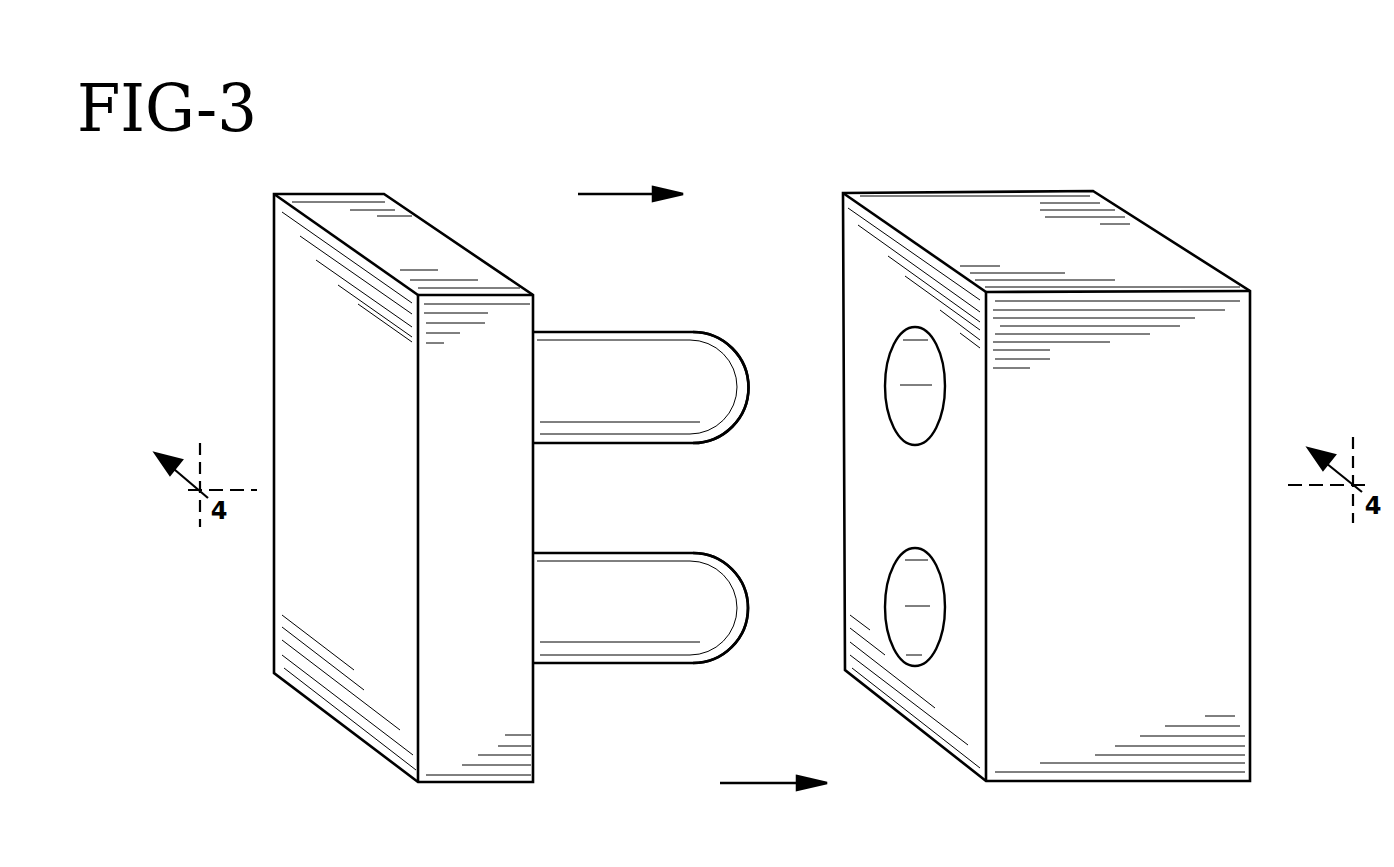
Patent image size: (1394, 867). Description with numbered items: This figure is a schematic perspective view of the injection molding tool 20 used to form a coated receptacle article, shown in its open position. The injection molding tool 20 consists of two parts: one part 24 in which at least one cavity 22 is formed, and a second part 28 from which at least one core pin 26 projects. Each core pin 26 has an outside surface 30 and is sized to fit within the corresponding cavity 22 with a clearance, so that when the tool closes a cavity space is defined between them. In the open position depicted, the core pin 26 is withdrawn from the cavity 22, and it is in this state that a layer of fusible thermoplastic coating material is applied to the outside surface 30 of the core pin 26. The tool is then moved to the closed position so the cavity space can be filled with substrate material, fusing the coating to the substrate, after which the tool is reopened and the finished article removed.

The injection molding tool 20 is at (1250, 150).
The cavity 22 is at (912, 607).
The part 24 is at (1000, 233).
The core pin 26 is at (670, 350).
The second part 28 is at (418, 248).
The outside surface 30 is at (737, 378).